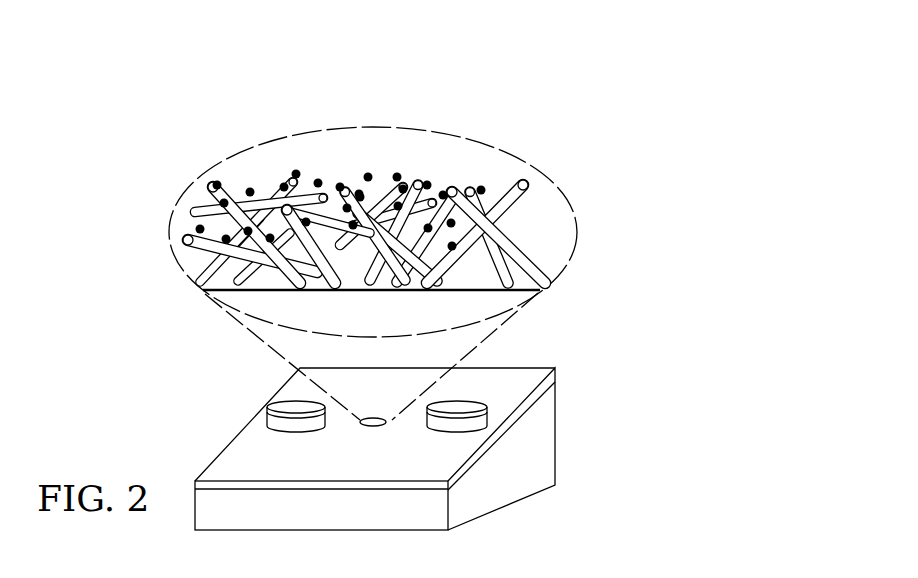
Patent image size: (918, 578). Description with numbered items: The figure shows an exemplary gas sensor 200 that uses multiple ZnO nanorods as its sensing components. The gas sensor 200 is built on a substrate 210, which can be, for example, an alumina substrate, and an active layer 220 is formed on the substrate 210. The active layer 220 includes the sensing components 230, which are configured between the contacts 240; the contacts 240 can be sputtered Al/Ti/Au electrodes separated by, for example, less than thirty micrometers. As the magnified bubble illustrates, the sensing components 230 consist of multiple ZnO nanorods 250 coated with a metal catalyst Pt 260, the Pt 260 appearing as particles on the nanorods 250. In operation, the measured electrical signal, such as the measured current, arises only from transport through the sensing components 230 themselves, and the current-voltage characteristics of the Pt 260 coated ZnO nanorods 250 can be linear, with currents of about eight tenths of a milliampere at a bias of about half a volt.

The gas sensor 200 is at (524, 93).
The substrate 210 is at (547, 410).
The active layer 220 is at (541, 368).
The sensing components 230 is at (373, 419).
The contacts 240 is at (282, 410).
The ZnO nanorods 250 is at (513, 200).
The metal catalyst Pt 260 is at (368, 175).